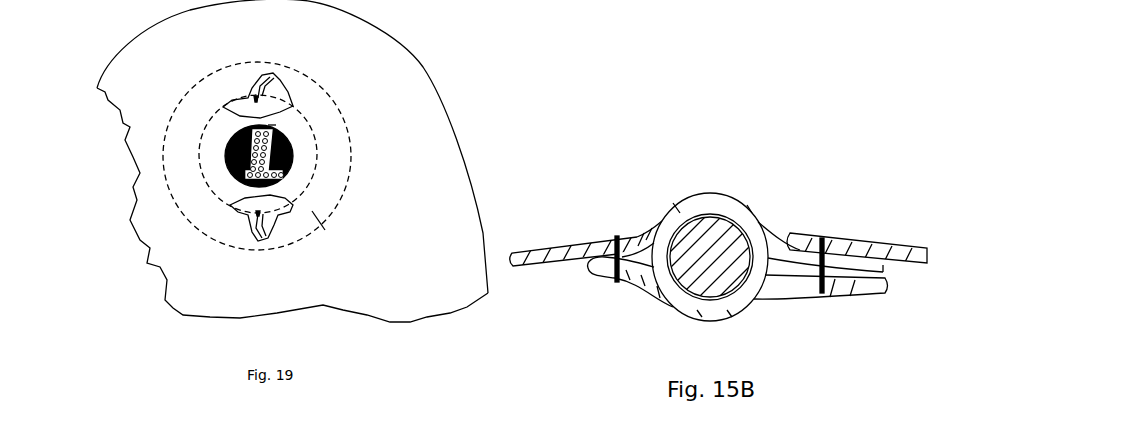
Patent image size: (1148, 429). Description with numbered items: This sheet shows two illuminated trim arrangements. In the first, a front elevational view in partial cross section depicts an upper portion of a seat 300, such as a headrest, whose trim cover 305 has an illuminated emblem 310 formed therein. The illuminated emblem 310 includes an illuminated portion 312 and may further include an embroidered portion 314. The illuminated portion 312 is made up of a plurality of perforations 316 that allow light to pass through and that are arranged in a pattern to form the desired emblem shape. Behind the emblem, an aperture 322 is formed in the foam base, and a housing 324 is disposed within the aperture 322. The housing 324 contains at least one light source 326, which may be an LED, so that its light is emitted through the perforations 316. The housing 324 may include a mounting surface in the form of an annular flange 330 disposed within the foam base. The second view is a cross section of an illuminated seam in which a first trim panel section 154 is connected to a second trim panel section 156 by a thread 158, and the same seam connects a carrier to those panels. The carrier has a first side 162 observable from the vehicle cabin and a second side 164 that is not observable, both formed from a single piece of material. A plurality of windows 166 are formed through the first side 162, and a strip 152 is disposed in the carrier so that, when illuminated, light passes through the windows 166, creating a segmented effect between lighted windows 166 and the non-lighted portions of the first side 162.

In FIG. 19, the upper portion of a seat 300 is at (474, 61).
In FIG. 19, the trim cover 305 is at (360, 48).
In FIG. 19, the illuminated emblem 310 is at (295, 134).
In FIG. 19, the illuminated portion 312 is at (284, 177).
In FIG. 19, the embroidered portion 314 is at (227, 173).
In FIG. 19, the perforations 316 is at (272, 125).
In FIG. 19, the aperture 322 is at (319, 150).
In FIG. 19, the housing 324 is at (325, 230).
In FIG. 19, the light source 326 is at (247, 100).
In FIG. 19, the flange 330 is at (292, 92).
In FIG. 15B, the strip 152 is at (733, 236).
In FIG. 15B, the first trim panel section 154 is at (900, 250).
In FIG. 15B, the second trim panel section 156 is at (527, 268).
In FIG. 15B, the thread 158 is at (615, 238).
In FIG. 15B, the first side 162 is at (660, 208).
In FIG. 15B, the second side 164 is at (662, 300).
In FIG. 15B, the windows 166 is at (712, 197).